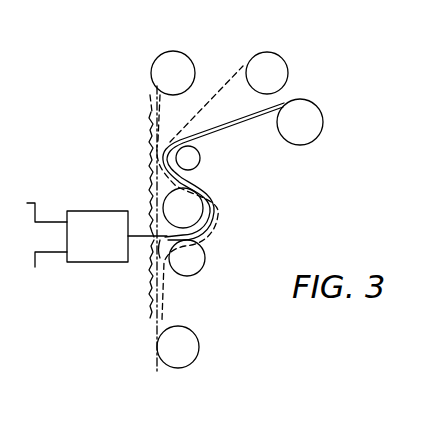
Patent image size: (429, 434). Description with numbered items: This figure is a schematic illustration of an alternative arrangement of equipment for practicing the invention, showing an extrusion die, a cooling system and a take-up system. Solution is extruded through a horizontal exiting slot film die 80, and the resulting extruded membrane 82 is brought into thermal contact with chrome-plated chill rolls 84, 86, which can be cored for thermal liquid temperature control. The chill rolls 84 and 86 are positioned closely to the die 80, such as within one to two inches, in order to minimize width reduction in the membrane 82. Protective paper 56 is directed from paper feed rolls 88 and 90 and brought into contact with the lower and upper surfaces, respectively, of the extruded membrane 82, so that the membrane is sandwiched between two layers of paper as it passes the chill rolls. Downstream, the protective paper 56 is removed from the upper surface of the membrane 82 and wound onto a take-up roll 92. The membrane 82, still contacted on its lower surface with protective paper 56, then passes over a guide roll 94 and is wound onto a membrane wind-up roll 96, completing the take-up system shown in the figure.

The protective paper 56 is at (153, 127).
The horizontal exiting slot film die 80 is at (88, 255).
The extruded membrane 82 is at (140, 240).
The chill roll 84 is at (200, 260).
The chill roll 86 is at (200, 208).
The paper feed roll 88 is at (193, 355).
The paper feed roll 90 is at (163, 62).
The take-up roll 92 is at (280, 72).
The guide roll 94 is at (198, 163).
The membrane wind-up roll 96 is at (325, 125).